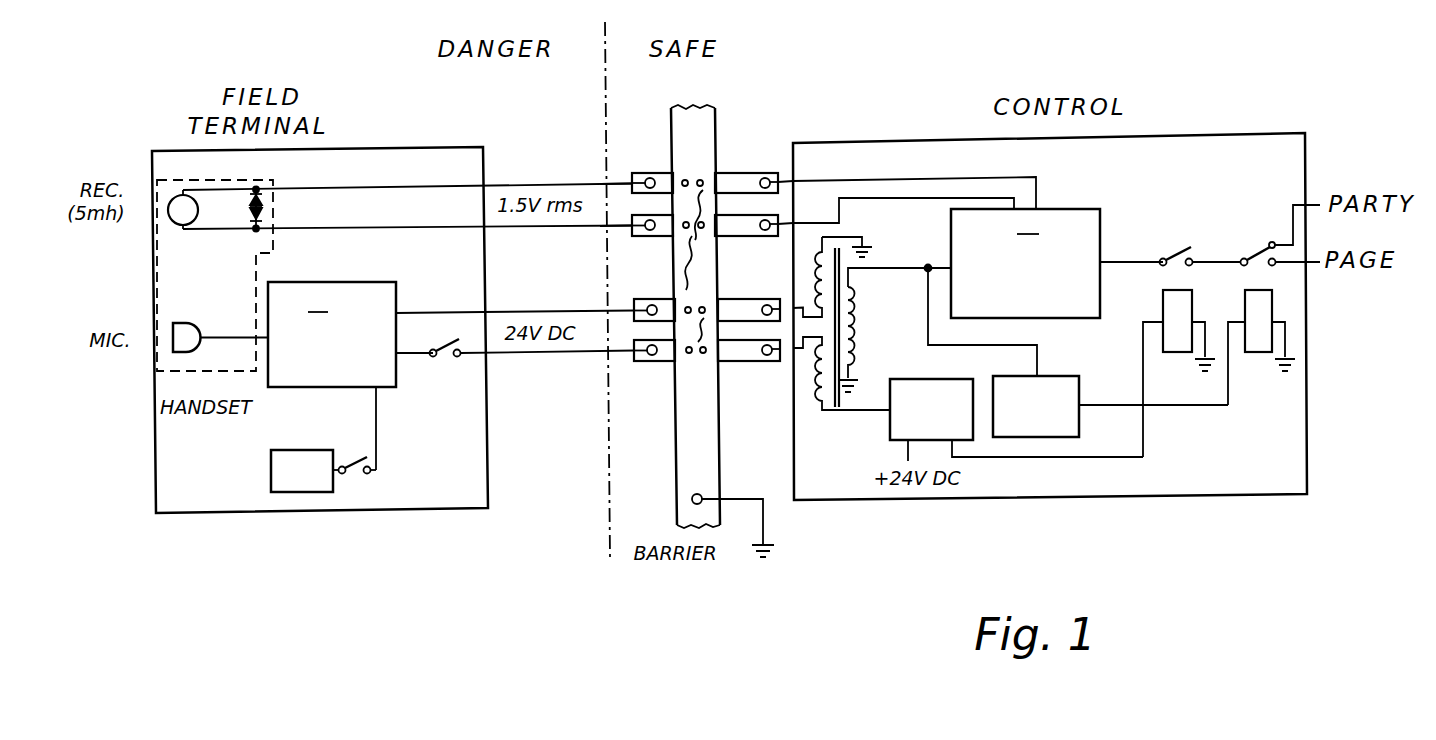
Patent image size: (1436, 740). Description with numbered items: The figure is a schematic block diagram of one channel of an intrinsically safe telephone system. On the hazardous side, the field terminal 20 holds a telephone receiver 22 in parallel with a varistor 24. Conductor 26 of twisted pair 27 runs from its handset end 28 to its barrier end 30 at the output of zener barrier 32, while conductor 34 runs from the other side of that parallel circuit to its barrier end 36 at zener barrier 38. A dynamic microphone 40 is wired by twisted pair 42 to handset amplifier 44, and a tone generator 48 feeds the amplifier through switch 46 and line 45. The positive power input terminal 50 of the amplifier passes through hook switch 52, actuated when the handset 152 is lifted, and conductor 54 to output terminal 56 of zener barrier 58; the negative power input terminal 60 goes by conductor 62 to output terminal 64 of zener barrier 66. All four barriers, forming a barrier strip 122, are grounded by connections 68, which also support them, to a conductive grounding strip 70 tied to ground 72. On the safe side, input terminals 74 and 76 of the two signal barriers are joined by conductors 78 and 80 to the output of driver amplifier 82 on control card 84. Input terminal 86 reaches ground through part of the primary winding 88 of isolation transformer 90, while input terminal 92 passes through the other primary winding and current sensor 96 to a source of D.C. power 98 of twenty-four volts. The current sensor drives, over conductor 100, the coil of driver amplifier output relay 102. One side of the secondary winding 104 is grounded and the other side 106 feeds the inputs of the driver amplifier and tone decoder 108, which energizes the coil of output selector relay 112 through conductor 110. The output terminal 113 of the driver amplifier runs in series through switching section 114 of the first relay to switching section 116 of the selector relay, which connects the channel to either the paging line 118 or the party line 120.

The field terminal 20 is at (413, 135).
The telephone receiver 22 is at (178, 225).
The varistor 24 is at (272, 210).
The conductor 26 is at (355, 187).
The twisted pair 27 is at (407, 205).
The handset end 28 is at (208, 179).
The barrier end 30 is at (612, 183).
The zener barrier 32 is at (650, 171).
The conductor 34 is at (348, 230).
The barrier end 36 is at (608, 228).
The zener barrier 38 is at (653, 238).
The dynamic microphone 40 is at (186, 322).
The twisted pair 42 is at (227, 333).
The handset amplifier 44 is at (300, 300).
The line 45 is at (380, 426).
The switch 46 is at (368, 475).
The tone generator 48 is at (300, 450).
The positive power input terminal 50 is at (404, 354).
The hook switch 52 is at (449, 367).
The conductor 54 is at (533, 353).
The output terminal 56 is at (638, 361).
The zener barrier 58 is at (658, 367).
The negative power input terminal 60 is at (402, 311).
The conductor 62 is at (556, 311).
The output terminal 64 is at (653, 300).
The zener barrier 66 is at (636, 300).
The grounding connections 68 is at (694, 266).
The conductive grounding strip 70 is at (690, 446).
The ground 72 is at (762, 564).
The input terminal 74 is at (765, 172).
The input terminal 76 is at (771, 237).
The conductor 78 is at (870, 179).
The conductor 80 is at (899, 201).
The driver amplifier 82 is at (1000, 240).
The control card 84 is at (1165, 114).
The input terminal 86 is at (768, 297).
The primary winding 88 is at (812, 265).
The isolation transformer 90 is at (872, 318).
The input terminal 92 is at (769, 363).
The current sensor 96 is at (920, 379).
The source of D.C. power 98 is at (902, 452).
The conductor 100 is at (1013, 462).
The driver amplifier output relay 102 is at (1164, 290).
The secondary winding 104 is at (869, 339).
The other side of secondary winding 106 is at (899, 277).
The tone decoder 108 is at (1059, 376).
The conductor 110 is at (1210, 418).
The output selector relay 112 is at (1248, 290).
The output terminal 113 is at (1105, 258).
The switching section 114 is at (1186, 247).
The switching section 116 is at (1256, 252).
The line 118 is at (1314, 268).
The line 120 is at (1320, 201).
The barrier strip 122 is at (674, 301).
The handset 152 is at (200, 395).